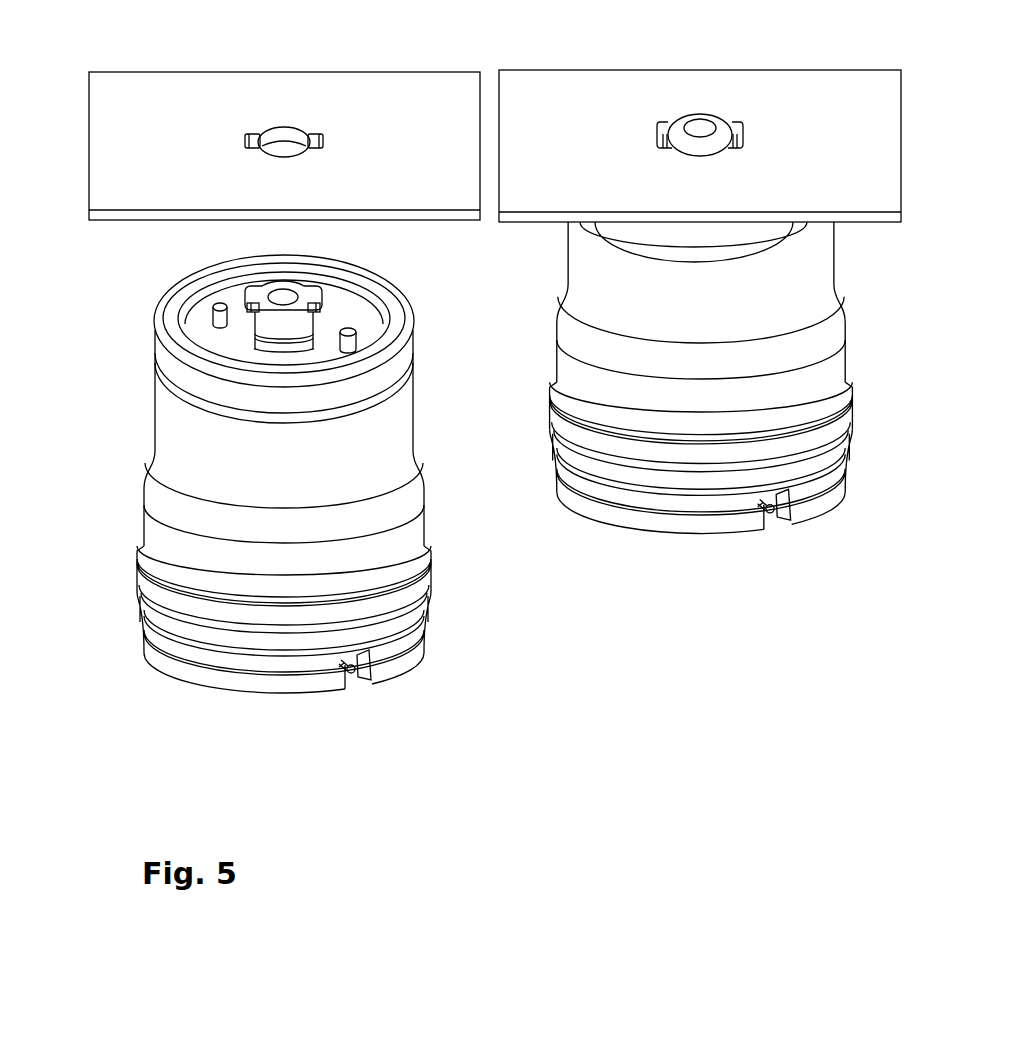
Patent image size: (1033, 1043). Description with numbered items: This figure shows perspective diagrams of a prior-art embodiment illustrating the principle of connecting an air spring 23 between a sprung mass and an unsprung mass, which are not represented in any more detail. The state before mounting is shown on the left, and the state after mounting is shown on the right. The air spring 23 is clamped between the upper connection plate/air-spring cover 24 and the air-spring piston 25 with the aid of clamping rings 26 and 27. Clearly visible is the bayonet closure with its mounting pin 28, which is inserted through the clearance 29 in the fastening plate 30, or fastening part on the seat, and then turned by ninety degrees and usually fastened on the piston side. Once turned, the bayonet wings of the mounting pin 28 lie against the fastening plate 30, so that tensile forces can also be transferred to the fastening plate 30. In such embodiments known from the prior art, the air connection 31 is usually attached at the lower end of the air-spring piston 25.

The air spring 23 is at (135, 446).
The upper connection plate/air-spring cover 24 is at (222, 337).
The air-spring piston 25 is at (258, 679).
The clamping ring 26 is at (137, 351).
The clamping ring 27 is at (125, 567).
The mounting pin 28 is at (717, 136).
The clearance 29 is at (292, 136).
The fastening plate 30 is at (173, 113).
The air connection 31 is at (393, 668).